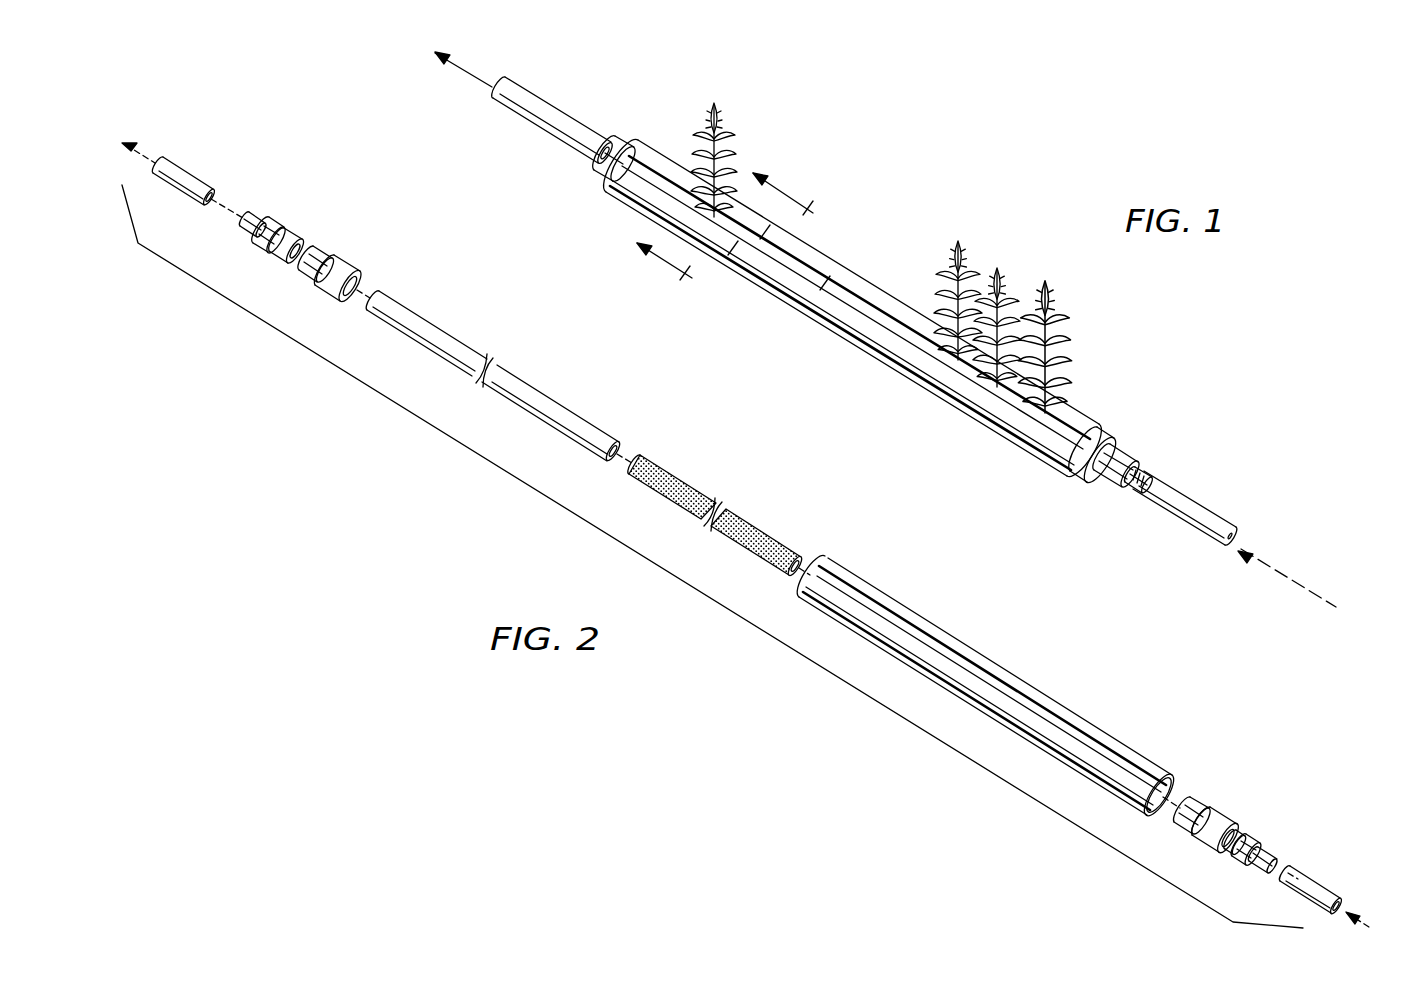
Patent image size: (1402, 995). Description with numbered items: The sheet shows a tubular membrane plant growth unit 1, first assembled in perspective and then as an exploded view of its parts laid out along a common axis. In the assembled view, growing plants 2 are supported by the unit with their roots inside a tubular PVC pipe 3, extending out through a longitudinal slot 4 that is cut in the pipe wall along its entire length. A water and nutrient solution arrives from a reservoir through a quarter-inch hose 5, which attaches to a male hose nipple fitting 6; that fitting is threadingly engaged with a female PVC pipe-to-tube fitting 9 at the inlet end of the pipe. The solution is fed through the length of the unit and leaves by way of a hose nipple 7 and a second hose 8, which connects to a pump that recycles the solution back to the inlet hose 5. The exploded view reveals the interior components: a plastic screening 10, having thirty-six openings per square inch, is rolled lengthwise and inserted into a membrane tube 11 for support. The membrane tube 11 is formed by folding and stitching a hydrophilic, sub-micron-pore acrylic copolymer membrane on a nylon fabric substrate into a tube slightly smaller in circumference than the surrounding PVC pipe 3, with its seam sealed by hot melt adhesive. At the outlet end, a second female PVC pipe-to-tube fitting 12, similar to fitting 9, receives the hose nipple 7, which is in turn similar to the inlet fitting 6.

In FIG. 1, the tubular membrane plant growth unit 1 is at (885, 329).
In FIG. 1, the growing plants 2 is at (966, 256).
In FIG. 1, the tubular PVC pipe 3 is at (858, 275).
In FIG. 2, the tubular PVC pipe 3 is at (974, 659).
In FIG. 1, the longitudinal slot 4 is at (784, 336).
In FIG. 1, the hose 5 is at (1190, 500).
In FIG. 2, the hose 5 is at (1302, 876).
In FIG. 1, the hose nipple fitting 6 is at (1124, 452).
In FIG. 2, the hose nipple fitting 6 is at (1264, 851).
In FIG. 1, the hose nipple 7 is at (626, 144).
In FIG. 2, the hose nipple 7 is at (288, 235).
In FIG. 1, the hose 8 is at (578, 122).
In FIG. 2, the hose 8 is at (199, 180).
In FIG. 2, the PVC pipe-to-tube fitting 9 is at (1212, 813).
In FIG. 2, the plastic screening 10 is at (708, 492).
In FIG. 2, the membrane tube 11 is at (534, 394).
In FIG. 2, the PVC pipe-to-tube fitting 12 is at (344, 265).